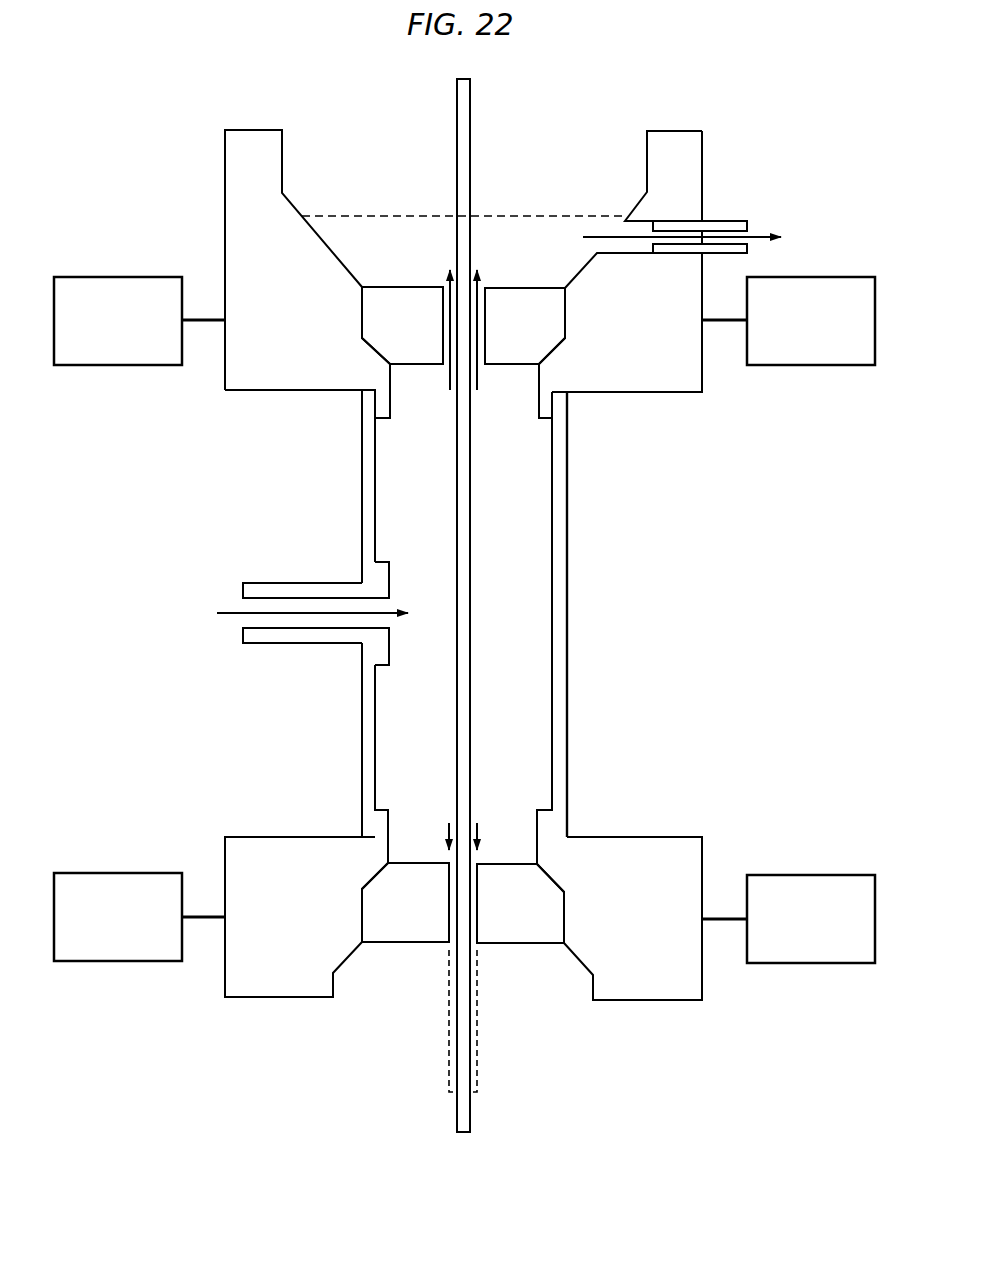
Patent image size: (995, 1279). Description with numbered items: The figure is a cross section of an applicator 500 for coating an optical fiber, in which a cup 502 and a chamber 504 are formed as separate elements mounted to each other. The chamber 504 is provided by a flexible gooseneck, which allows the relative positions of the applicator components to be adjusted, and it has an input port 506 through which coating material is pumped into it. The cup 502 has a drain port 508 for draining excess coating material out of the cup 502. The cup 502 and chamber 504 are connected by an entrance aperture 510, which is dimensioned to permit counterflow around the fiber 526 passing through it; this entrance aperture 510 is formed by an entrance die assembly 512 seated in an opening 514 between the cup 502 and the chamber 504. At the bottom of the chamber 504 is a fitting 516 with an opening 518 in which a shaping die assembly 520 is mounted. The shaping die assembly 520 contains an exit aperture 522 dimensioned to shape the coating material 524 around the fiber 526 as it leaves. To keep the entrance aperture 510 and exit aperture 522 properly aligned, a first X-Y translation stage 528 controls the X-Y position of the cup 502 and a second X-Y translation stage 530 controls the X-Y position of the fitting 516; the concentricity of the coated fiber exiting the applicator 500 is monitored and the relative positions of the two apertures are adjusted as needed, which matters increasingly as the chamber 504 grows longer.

The applicator 500 is at (727, 106).
The cup 502 is at (647, 165).
The chamber 504 is at (553, 508).
The input port 506 is at (300, 583).
The drain port 508 is at (640, 220).
The entrance aperture 510 is at (442, 300).
The entrance die assembly 512 is at (418, 336).
The opening 514 is at (362, 320).
The fitting 516 is at (640, 837).
The opening 518 is at (362, 912).
The shaping die assembly 520 is at (418, 916).
The exit aperture 522 is at (473, 882).
The coating material 524 is at (480, 1040).
The fiber 526 is at (472, 107).
The first X-Y translation stage 528 is at (116, 277).
The second X-Y translation stage 530 is at (116, 873).